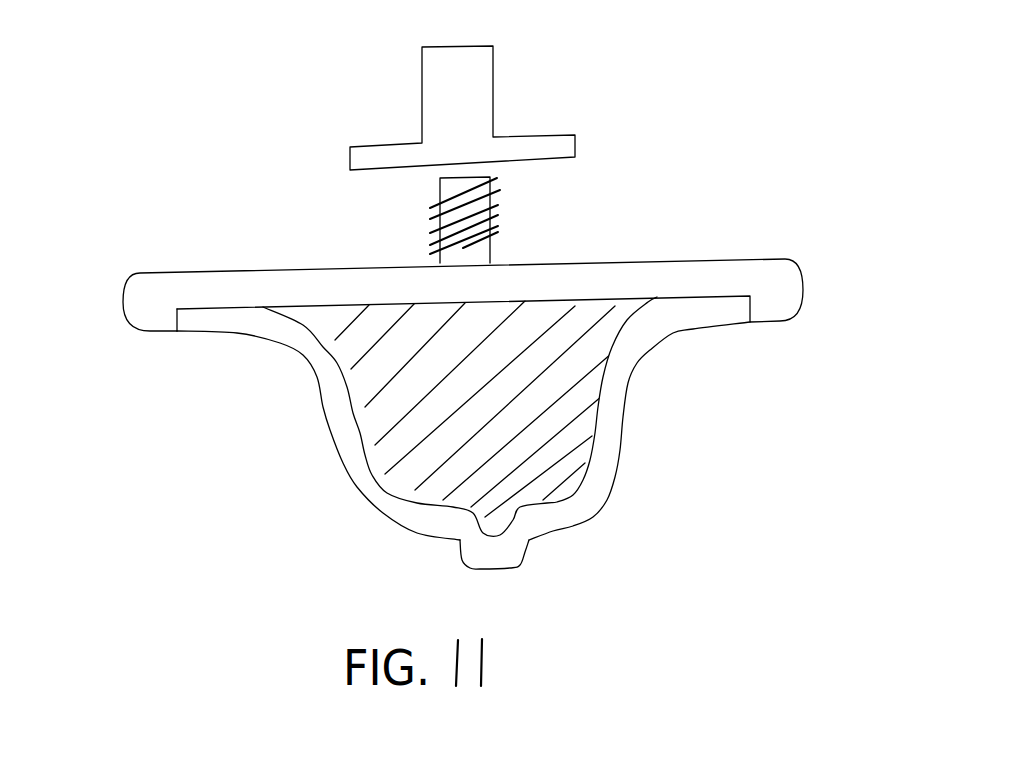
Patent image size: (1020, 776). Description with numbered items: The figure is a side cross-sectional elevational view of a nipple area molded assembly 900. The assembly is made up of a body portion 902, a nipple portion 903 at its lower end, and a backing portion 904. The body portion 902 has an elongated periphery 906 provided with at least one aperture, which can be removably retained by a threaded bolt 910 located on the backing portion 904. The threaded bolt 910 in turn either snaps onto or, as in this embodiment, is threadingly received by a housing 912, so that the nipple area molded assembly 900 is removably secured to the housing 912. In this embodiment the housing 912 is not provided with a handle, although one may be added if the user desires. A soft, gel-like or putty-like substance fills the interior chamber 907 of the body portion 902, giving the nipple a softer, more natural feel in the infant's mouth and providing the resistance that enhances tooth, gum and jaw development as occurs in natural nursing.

The nipple area molded assembly 900 is at (463, 451).
The body portion 902 is at (612, 420).
The nipple portion 903 is at (510, 550).
The backing portion 904 is at (122, 318).
The elongated periphery 906 is at (795, 272).
The interior chamber 907 is at (367, 390).
The threaded bolt 910 is at (487, 203).
The housing 912 is at (495, 82).